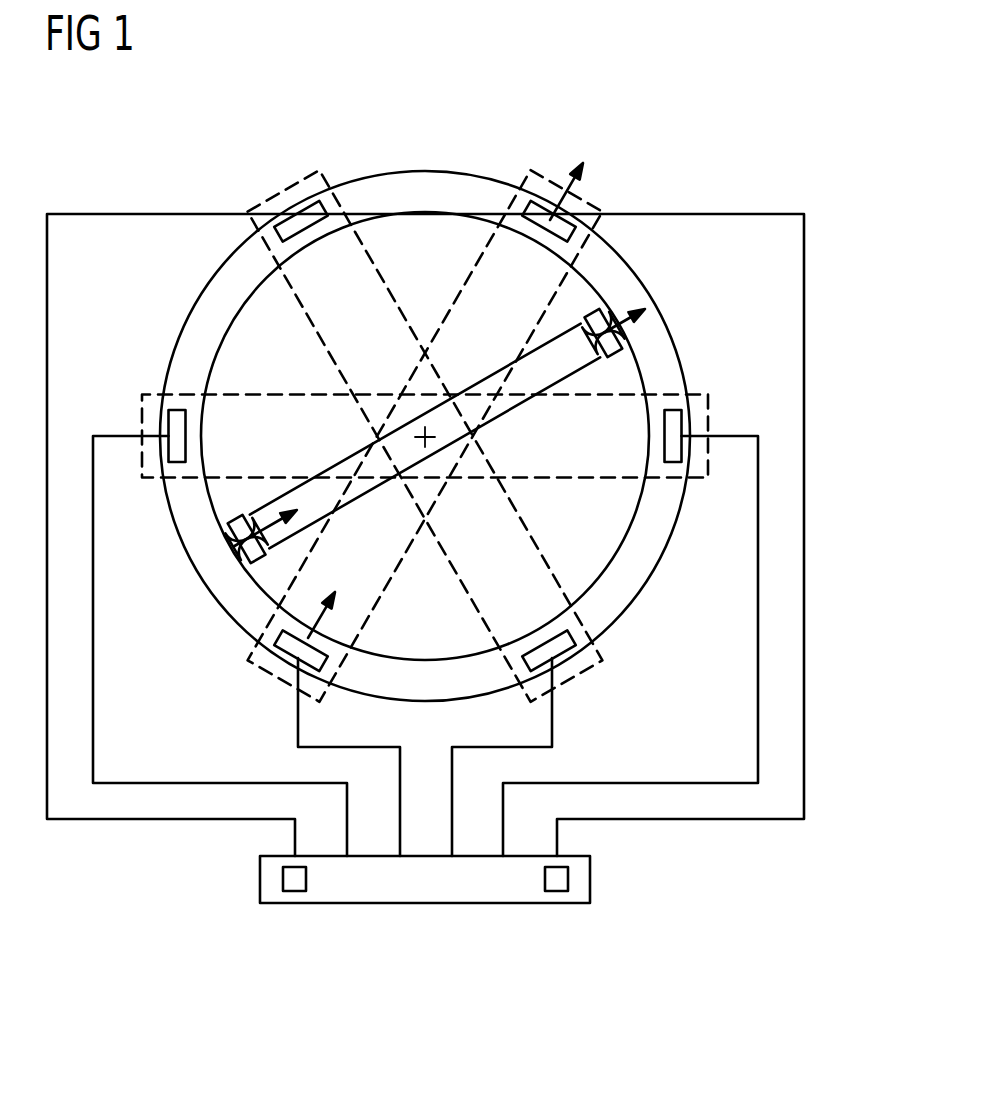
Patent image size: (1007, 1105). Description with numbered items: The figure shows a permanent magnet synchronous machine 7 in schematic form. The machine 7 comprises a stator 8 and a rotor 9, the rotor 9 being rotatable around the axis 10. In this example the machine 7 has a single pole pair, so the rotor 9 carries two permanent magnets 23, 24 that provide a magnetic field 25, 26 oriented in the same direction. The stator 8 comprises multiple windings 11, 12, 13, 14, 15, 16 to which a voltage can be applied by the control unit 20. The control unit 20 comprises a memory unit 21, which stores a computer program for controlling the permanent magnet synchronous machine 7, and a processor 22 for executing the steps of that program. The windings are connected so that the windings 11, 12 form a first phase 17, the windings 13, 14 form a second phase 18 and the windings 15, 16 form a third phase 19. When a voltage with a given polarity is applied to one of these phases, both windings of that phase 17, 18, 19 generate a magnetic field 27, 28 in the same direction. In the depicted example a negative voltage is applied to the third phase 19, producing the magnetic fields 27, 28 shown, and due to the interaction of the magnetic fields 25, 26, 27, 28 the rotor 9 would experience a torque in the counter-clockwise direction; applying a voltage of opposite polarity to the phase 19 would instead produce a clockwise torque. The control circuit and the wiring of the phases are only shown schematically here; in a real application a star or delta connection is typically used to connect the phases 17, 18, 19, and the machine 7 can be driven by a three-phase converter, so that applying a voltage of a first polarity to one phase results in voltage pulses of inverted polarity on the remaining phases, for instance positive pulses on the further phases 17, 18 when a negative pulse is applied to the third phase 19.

The permanent magnet synchronous machine 7 is at (457, 118).
The stator 8 is at (428, 180).
The rotor 9 is at (585, 293).
The axis 10 is at (432, 440).
The winding 11 is at (683, 428).
The winding 12 is at (170, 428).
The winding 13 is at (301, 205).
The winding 14 is at (570, 665).
The winding 15 is at (272, 666).
The winding 16 is at (548, 208).
The first phase 17 is at (707, 450).
The second phase 18 is at (262, 203).
The third phase 19 is at (505, 204).
The control unit 20 is at (428, 903).
The memory unit 21 is at (557, 891).
The processor 22 is at (294, 891).
The permanent magnet 23 is at (613, 330).
The permanent magnet 24 is at (233, 553).
The magnetic field 25 is at (632, 308).
The magnetic field 26 is at (268, 518).
The magnetic field 27 is at (300, 612).
The magnetic field 28 is at (578, 198).